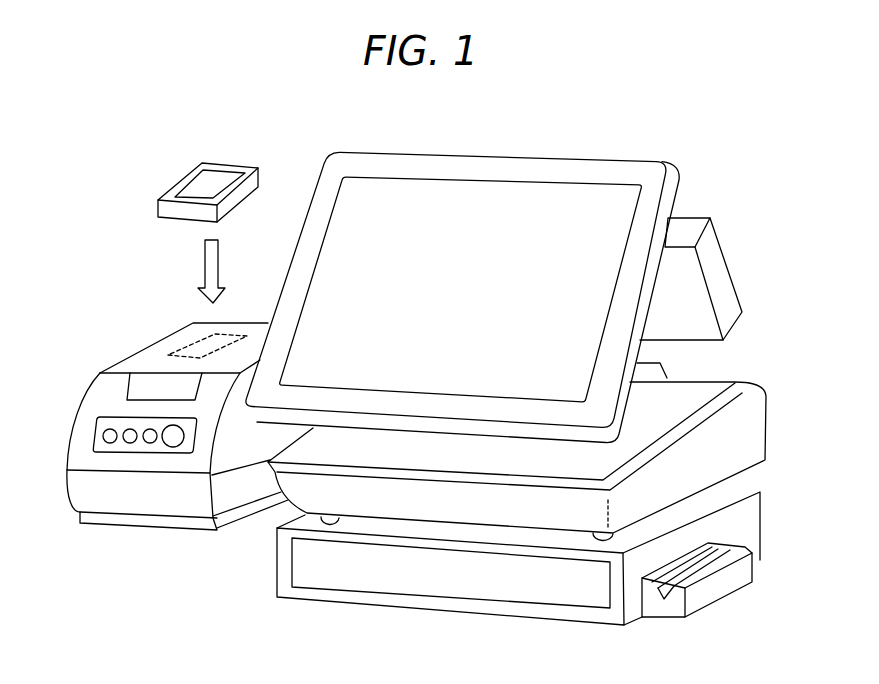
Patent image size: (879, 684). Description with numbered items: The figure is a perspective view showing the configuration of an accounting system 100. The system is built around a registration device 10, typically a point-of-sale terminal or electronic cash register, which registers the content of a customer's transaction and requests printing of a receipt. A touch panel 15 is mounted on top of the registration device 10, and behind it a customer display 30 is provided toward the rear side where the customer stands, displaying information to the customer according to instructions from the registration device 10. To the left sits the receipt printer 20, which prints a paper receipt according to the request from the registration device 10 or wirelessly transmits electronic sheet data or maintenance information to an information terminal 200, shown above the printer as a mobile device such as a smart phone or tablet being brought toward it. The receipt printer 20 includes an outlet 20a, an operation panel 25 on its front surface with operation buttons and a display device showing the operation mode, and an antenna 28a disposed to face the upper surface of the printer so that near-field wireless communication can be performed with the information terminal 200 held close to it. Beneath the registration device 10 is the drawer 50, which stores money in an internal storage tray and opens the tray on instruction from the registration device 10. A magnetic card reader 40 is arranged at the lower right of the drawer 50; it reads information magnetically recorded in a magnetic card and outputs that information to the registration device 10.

The accounting system 100 is at (727, 160).
The registration device 10 is at (762, 357).
The touch panel 15 is at (538, 156).
The customer display 30 is at (730, 273).
The receipt printer 20 is at (120, 358).
The outlet 20a is at (137, 388).
The operation panel 25 is at (93, 433).
The antenna 28a is at (192, 342).
The drawer 50 is at (762, 508).
The magnetic card reader 40 is at (733, 597).
The information terminal 200 is at (238, 164).